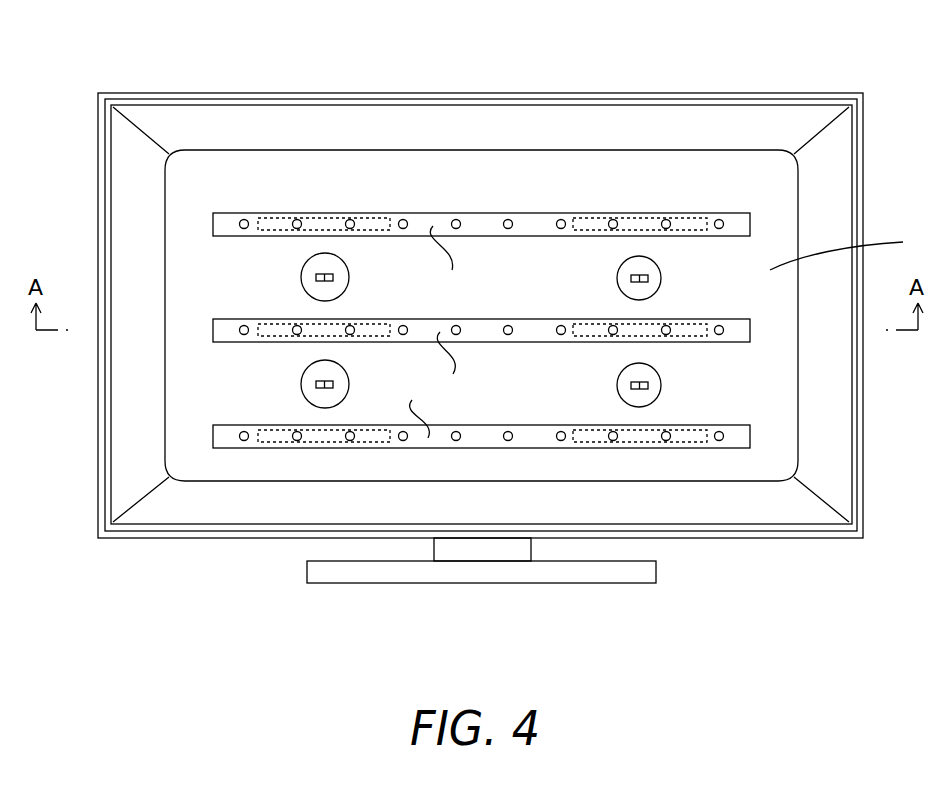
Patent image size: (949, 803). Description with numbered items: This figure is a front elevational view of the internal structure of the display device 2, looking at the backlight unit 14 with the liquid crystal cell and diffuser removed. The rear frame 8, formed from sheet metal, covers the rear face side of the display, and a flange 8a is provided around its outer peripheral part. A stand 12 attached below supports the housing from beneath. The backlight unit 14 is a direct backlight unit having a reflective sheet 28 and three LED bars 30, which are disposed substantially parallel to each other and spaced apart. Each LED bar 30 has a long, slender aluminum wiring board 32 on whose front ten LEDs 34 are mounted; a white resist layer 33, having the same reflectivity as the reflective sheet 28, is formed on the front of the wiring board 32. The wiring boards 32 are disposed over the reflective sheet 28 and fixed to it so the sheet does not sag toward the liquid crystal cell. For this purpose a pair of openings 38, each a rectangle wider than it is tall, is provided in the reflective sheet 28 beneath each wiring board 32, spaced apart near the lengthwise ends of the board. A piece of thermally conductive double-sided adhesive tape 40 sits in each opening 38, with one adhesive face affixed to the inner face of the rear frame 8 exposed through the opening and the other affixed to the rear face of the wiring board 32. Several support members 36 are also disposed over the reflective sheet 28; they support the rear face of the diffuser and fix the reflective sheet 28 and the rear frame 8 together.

The display device 2 is at (813, 57).
The rear frame 8 is at (864, 112).
The flange 8a is at (858, 150).
The reflective sheet 28 is at (816, 196).
The backlight unit 14 is at (851, 249).
The stand 12 is at (642, 574).
The LED bar 30 is at (552, 163).
The wiring board 32 is at (537, 222).
The LED 34 is at (459, 220).
The white resist layer 33 is at (436, 332).
The support member 36 is at (346, 265).
The opening 38 is at (285, 212).
The double-sided adhesive tape 40 is at (336, 212).